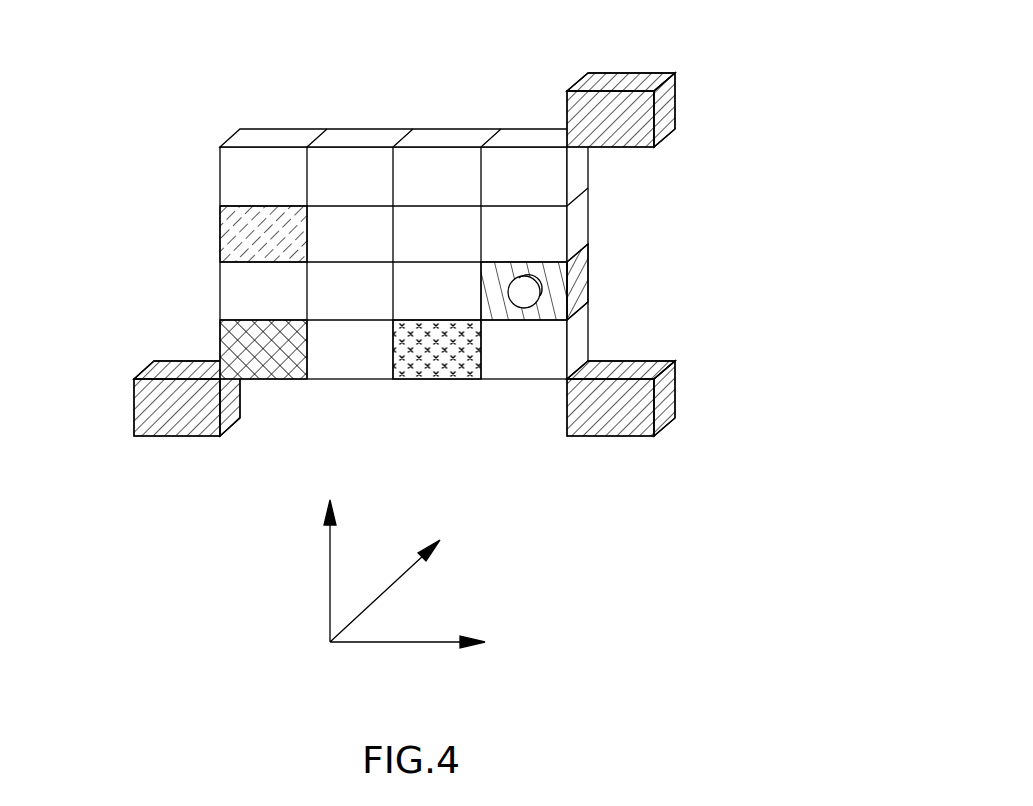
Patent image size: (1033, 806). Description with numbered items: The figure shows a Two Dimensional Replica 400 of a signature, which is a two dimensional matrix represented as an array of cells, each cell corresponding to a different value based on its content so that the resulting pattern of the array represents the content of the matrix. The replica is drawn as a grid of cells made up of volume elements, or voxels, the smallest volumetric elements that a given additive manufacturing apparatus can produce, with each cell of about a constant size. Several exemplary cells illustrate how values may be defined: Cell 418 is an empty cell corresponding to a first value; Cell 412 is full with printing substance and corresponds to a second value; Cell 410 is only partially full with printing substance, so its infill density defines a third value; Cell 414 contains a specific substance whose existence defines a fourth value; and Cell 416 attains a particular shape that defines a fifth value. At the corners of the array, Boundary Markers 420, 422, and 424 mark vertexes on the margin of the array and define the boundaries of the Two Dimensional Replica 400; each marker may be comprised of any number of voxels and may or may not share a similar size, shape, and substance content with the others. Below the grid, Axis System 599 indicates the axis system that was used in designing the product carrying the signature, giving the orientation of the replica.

The two dimensional replica 400 is at (208, 76).
The cell 410 is at (220, 230).
The cell 412 is at (220, 342).
The cell 414 is at (448, 379).
The cell 416 is at (588, 272).
The cell 418 is at (588, 214).
The boundary marker 420 is at (148, 436).
The boundary marker 422 is at (675, 390).
The boundary marker 424 is at (630, 72).
The axis system 599 is at (355, 642).